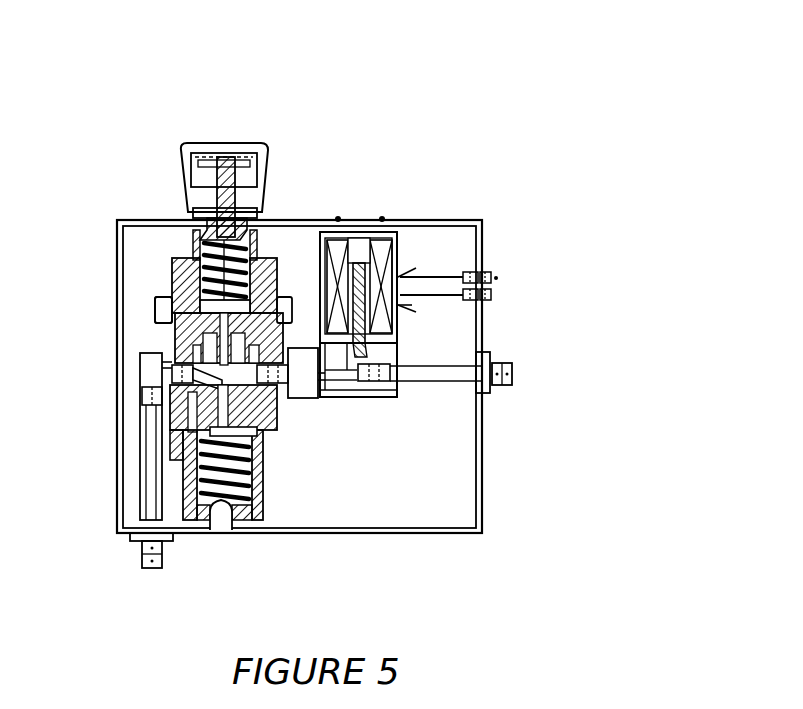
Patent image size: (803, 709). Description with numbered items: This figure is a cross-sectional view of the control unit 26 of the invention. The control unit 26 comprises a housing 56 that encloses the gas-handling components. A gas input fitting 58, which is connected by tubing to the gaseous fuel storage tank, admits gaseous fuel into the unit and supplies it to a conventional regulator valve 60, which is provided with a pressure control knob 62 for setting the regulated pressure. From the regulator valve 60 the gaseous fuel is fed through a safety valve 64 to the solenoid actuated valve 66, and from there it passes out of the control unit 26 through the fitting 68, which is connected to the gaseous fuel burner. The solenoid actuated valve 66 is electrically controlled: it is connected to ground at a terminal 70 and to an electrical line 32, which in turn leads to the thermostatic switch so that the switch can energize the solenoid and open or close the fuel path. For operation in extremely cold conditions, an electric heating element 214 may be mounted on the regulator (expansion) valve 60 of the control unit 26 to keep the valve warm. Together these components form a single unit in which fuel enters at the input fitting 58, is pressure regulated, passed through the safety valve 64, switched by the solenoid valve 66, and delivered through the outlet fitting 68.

The control unit 26 is at (336, 146).
The electrical line 32 is at (496, 278).
The housing 56 is at (349, 534).
The gas input fitting 58 is at (140, 547).
The regulator valve 60 is at (168, 246).
The pressure control knob 62 is at (203, 151).
The safety valve 64 is at (299, 399).
The solenoid actuated valve 66 is at (365, 414).
The fitting 68 is at (514, 372).
The terminal 70 is at (496, 295).
The electric heating element 214 is at (157, 298).